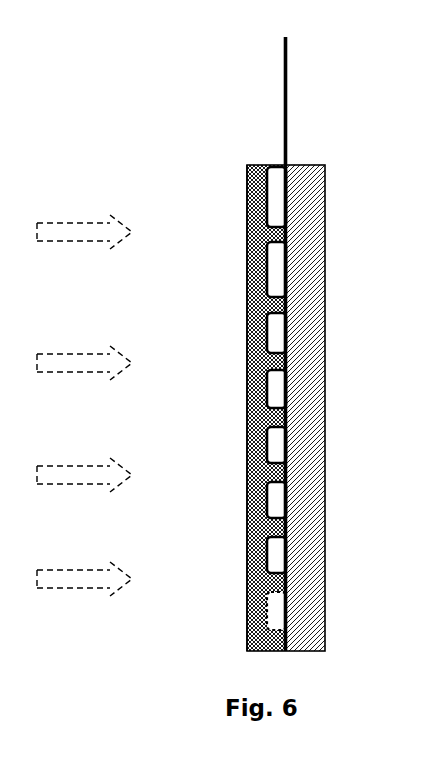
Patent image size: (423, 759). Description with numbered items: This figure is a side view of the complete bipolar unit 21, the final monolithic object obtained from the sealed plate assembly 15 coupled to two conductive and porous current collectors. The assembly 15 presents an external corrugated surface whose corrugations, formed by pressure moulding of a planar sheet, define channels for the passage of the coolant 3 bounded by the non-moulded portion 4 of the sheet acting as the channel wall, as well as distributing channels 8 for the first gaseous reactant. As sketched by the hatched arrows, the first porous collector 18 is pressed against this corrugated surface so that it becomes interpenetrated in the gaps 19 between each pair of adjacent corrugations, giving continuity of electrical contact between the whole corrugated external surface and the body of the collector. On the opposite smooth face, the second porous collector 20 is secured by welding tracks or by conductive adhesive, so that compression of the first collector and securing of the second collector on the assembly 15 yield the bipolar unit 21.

The channels for the passage of the coolant 3 is at (259, 335).
The non-moulded portion 4 is at (259, 315).
The distributing channels of the first gaseous reactant 8 is at (259, 190).
The assembly 15 is at (289, 108).
The first porous collector 18 is at (279, 422).
The gaps 19 is at (246, 445).
The second porous collector 20 is at (308, 402).
The bipolar unit 21 is at (264, 110).